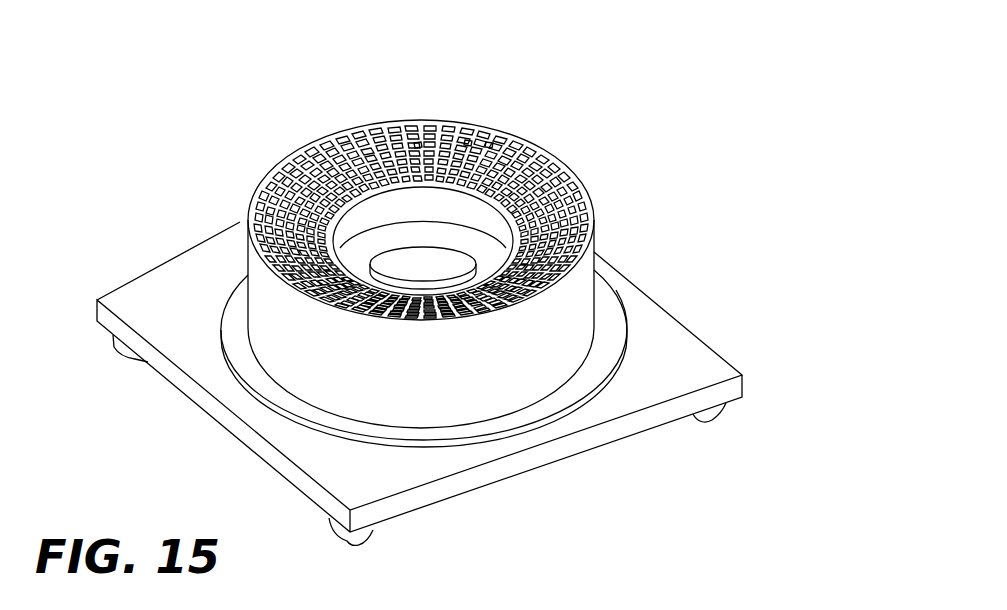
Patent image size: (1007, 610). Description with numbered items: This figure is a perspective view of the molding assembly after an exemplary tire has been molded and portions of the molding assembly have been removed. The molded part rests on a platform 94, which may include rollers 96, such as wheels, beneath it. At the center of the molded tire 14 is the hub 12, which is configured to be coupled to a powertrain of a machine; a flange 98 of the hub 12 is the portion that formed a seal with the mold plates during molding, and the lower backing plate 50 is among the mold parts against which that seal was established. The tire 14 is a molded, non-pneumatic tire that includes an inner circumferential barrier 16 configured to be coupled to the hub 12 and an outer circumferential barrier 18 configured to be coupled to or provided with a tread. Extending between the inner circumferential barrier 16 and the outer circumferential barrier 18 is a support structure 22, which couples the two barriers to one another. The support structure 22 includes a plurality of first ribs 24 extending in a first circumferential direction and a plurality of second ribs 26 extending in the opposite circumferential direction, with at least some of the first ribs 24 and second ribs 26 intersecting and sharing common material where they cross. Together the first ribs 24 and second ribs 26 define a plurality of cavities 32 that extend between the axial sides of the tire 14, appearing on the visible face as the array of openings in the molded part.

The hub 12 is at (443, 237).
The tire 14 is at (420, 384).
The inner circumferential barrier 16 is at (367, 193).
The outer circumferential barrier 18 is at (316, 143).
The support structure 22 is at (418, 136).
The first ribs 24 is at (468, 138).
The second ribs 26 is at (488, 141).
The cavities 32 is at (555, 202).
The lower backing plate 50 is at (625, 322).
The platform 94 is at (743, 380).
The rollers 96 is at (710, 419).
The flange 98 is at (392, 212).